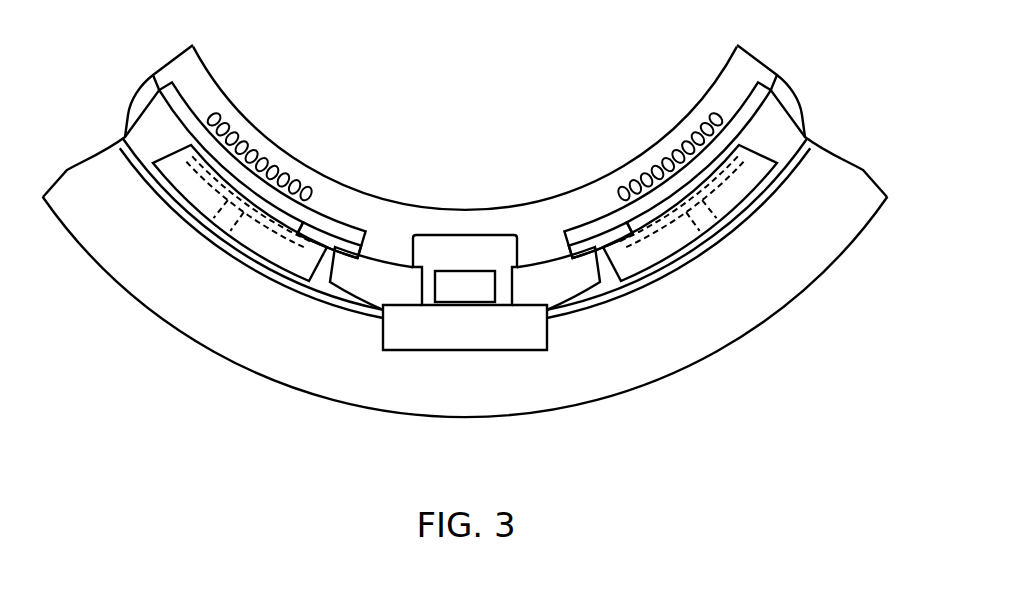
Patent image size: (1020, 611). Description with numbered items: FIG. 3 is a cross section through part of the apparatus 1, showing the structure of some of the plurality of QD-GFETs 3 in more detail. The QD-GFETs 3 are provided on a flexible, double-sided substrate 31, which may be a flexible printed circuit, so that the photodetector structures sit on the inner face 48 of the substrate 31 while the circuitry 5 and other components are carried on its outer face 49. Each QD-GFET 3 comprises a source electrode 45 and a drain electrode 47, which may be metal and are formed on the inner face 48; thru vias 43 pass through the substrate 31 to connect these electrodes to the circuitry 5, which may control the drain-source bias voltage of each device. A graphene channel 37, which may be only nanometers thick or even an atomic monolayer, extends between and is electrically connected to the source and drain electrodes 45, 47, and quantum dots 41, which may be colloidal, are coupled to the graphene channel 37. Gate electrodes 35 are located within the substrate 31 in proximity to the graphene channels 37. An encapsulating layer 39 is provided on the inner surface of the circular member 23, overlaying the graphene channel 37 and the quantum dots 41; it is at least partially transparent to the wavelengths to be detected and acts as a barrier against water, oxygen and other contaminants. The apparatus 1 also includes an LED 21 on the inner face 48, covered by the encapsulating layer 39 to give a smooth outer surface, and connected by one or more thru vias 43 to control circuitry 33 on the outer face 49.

The apparatus 1 is at (851, 151).
The QD-GFETs 3 is at (718, 117).
The circuitry 5 is at (260, 270).
The LED 21 is at (480, 232).
The circular member 23 is at (448, 395).
The substrate 31 is at (557, 273).
The control circuitry 33 is at (400, 353).
The gate electrodes 35 is at (710, 185).
The graphene channel 37 is at (605, 233).
The encapsulating layer 39 is at (364, 216).
The quantum dots 41 is at (700, 128).
The thru vias 43 is at (140, 175).
The source electrode 45 is at (184, 103).
The drain electrode 47 is at (333, 227).
The inner face 48 is at (772, 78).
The outer face 49 is at (810, 143).